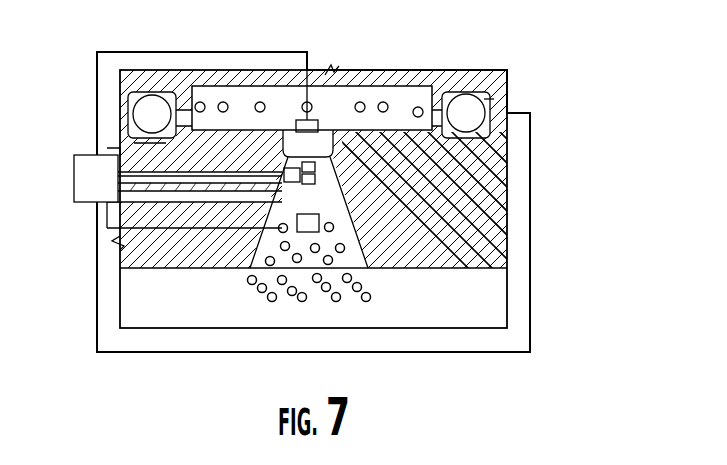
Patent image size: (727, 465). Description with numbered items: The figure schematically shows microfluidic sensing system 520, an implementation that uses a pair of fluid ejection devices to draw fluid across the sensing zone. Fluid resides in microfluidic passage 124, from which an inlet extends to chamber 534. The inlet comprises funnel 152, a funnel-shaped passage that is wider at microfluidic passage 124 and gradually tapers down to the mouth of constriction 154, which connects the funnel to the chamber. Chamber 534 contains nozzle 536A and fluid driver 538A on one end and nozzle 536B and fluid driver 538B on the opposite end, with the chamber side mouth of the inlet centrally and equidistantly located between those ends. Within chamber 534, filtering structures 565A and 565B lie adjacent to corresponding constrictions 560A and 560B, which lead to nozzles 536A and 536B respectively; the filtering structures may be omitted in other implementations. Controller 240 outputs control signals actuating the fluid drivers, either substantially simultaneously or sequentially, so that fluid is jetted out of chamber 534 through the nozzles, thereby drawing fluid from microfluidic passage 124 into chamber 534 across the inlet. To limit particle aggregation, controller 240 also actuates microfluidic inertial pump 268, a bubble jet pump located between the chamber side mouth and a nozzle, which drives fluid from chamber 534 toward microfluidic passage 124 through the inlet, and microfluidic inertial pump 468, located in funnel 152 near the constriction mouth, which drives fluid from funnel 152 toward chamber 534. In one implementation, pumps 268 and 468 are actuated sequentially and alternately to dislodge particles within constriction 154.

The microfluidic passage 124 is at (445, 326).
The microfluidic inertial pump 468 is at (320, 222).
The microfluidic sensing system 520 is at (580, 141).
The chamber 534 is at (430, 185).
The nozzle 536A is at (128, 108).
The nozzle 536B is at (482, 134).
The fluid driver 538A is at (152, 142).
The fluid driver 538B is at (486, 99).
The constriction 560A is at (192, 108).
The constriction 560B is at (421, 116).
The filtering structure 565A is at (198, 105).
The filtering structure 565B is at (432, 128).
The funnel 152 is at (265, 242).
The constriction 154 is at (250, 188).
The controller 240 is at (85, 203).
The microfluidic inertial pump 268 is at (395, 200).